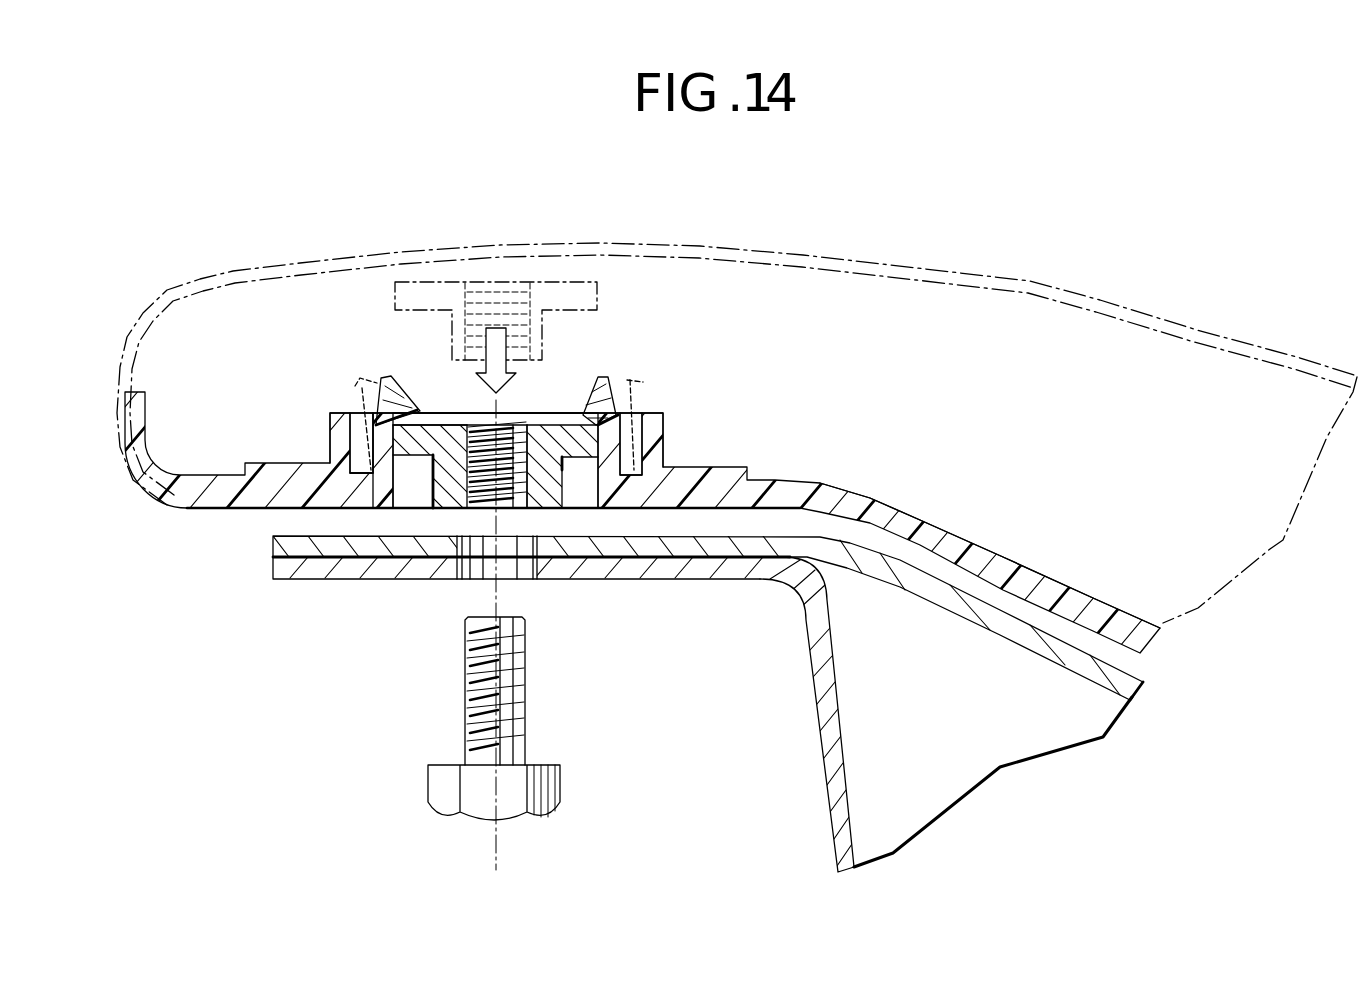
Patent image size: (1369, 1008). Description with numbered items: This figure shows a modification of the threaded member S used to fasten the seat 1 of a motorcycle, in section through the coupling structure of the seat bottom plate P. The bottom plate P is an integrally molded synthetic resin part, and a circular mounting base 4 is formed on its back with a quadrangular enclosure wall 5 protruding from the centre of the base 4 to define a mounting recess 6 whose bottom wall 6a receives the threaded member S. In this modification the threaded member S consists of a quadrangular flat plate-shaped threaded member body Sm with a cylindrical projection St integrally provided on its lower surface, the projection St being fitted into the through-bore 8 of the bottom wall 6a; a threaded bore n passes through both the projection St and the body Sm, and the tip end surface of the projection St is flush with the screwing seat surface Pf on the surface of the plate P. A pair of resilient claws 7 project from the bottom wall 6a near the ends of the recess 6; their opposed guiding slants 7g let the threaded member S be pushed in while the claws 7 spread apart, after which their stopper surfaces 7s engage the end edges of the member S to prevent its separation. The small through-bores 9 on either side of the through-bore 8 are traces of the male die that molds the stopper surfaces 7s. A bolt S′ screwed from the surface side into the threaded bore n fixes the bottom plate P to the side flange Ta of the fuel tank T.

The seat 1 is at (1100, 290).
The mounting base 4 is at (748, 468).
The enclosure wall 5 is at (662, 435).
The mounting recess 6 is at (549, 452).
The bottom wall 6a is at (442, 506).
The resilient claws 7 is at (385, 376).
The guiding slants 7g is at (366, 425).
The stopper surface 7s is at (410, 440).
The through-bore 8 is at (507, 506).
The small through-bores 9 is at (413, 498).
The threaded bore n is at (524, 443).
The seat bottom plate P is at (983, 546).
The screwing seat surface Pf is at (540, 497).
The threaded member S is at (559, 273).
The bolt S′ is at (510, 806).
The threaded member body Sm is at (369, 427).
The cylindrical projection St is at (445, 475).
The fuel tank T is at (826, 776).
The side flange Ta is at (338, 580).